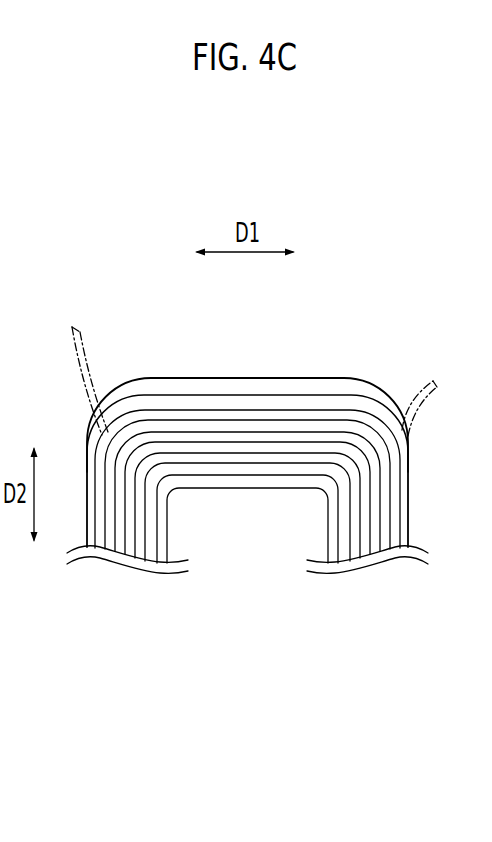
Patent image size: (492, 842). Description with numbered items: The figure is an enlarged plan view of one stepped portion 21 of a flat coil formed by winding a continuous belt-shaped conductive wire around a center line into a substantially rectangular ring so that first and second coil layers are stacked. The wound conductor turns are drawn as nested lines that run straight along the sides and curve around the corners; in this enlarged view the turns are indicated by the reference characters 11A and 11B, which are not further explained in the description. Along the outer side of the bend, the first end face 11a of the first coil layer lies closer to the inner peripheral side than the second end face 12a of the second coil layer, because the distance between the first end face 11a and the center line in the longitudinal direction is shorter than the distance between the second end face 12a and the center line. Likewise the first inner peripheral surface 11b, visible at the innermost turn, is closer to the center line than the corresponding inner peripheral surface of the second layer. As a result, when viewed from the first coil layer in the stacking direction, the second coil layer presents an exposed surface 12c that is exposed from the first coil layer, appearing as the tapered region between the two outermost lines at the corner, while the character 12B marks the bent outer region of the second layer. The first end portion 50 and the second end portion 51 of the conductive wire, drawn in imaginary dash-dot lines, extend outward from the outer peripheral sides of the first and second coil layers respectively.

The stepped portion 21 is at (346, 277).
The first conductor 11A is at (386, 506).
The second conductor 11B is at (306, 433).
The first end face 11a is at (258, 394).
The first inner peripheral surface 11b is at (243, 489).
The second end face 12a is at (197, 377).
The bent portion insulating layer 12B is at (356, 378).
The exposed surface 12c is at (137, 389).
The first end portion 50 is at (410, 403).
The second end portion 51 is at (77, 344).